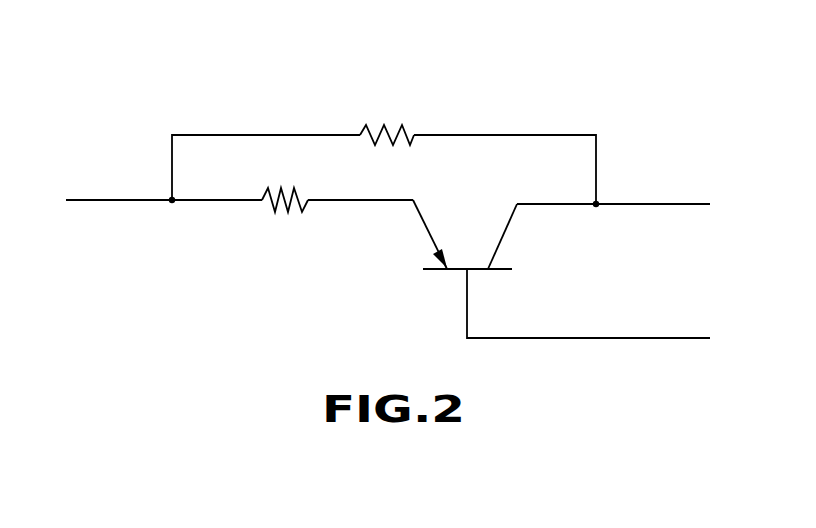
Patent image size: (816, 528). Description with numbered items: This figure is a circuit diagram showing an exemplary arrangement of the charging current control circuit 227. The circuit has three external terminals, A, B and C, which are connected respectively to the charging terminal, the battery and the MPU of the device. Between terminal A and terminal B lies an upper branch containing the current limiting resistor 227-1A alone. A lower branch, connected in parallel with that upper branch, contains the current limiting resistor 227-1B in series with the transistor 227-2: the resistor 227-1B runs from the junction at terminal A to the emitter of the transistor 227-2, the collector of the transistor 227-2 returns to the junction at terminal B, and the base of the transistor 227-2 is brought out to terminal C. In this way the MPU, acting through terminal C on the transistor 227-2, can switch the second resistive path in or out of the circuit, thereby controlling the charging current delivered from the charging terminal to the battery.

The charging current control circuit 227 is at (418, 40).
The current limiting resistor 227-1A is at (385, 122).
The current limiting resistor 227-1B is at (288, 213).
The transistor 227-2 is at (451, 272).